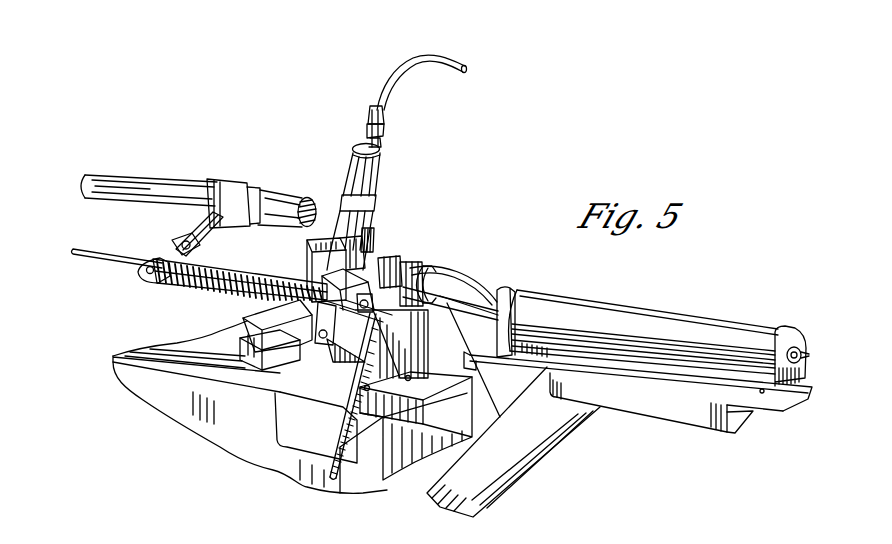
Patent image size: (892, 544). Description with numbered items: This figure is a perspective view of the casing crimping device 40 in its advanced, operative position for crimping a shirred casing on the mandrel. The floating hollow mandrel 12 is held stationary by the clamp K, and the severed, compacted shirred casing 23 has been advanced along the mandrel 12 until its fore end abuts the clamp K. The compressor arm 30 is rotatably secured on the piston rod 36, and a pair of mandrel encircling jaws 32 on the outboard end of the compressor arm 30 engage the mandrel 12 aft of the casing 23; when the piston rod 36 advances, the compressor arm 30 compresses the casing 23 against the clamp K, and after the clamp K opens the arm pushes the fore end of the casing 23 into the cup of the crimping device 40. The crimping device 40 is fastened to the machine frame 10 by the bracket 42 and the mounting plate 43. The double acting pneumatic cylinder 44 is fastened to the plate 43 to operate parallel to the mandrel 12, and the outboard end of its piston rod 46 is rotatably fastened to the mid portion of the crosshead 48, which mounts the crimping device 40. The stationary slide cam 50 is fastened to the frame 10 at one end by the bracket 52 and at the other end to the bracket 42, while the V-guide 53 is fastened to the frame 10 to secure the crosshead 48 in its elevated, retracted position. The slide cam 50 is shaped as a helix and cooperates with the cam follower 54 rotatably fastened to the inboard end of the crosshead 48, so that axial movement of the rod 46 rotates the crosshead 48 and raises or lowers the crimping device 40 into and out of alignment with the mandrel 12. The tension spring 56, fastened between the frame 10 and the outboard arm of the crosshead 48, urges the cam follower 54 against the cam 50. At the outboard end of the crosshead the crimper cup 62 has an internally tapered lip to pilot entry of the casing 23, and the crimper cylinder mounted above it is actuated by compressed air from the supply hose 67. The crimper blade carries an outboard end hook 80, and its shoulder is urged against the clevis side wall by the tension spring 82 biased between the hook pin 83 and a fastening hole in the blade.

The machine frame 10 is at (282, 418).
The floating hollow mandrel 12 is at (78, 258).
The severed shirred casing 23 is at (204, 284).
The compressor arm 30 is at (196, 222).
The mandrel encircling jaws 32 is at (155, 283).
The piston rod 36 is at (300, 183).
The crimping device 40 is at (345, 158).
The bracket 42 is at (513, 442).
The mounting plate 43 is at (653, 395).
The double acting pneumatic cylinder 44 is at (683, 330).
The piston rod 46 is at (467, 305).
The crosshead 48 is at (402, 264).
The stationary slide cam 50 is at (470, 278).
The bracket 52 is at (389, 257).
The V-guide 53 is at (482, 364).
The cam follower 54 is at (431, 286).
The tension spring 56 is at (331, 478).
The crimper cup 62 is at (244, 340).
The compressed air supply hose 67 is at (436, 70).
The outboard end hook 80 is at (386, 311).
The tension spring 82 is at (372, 236).
The hook pin 83 is at (374, 228).
The clamp K is at (305, 241).